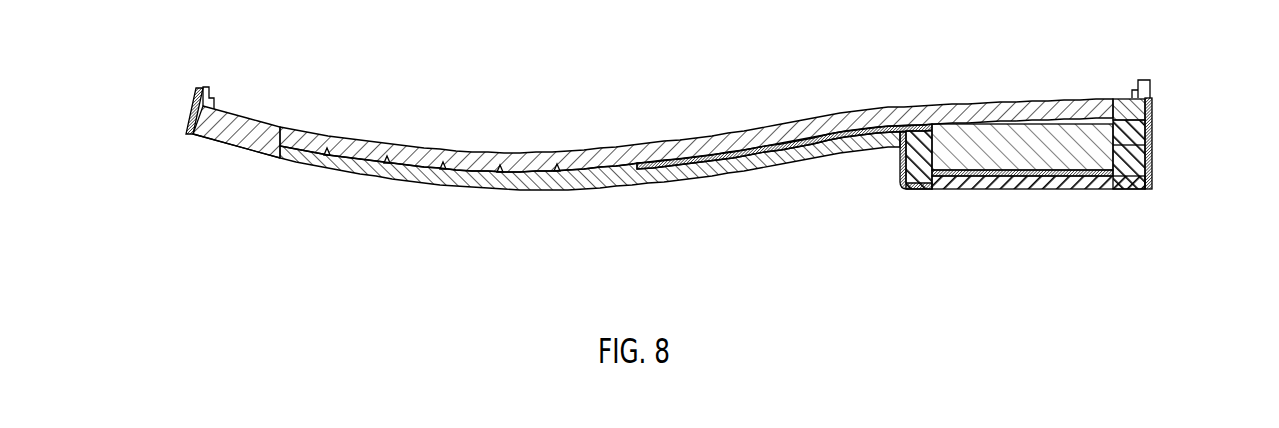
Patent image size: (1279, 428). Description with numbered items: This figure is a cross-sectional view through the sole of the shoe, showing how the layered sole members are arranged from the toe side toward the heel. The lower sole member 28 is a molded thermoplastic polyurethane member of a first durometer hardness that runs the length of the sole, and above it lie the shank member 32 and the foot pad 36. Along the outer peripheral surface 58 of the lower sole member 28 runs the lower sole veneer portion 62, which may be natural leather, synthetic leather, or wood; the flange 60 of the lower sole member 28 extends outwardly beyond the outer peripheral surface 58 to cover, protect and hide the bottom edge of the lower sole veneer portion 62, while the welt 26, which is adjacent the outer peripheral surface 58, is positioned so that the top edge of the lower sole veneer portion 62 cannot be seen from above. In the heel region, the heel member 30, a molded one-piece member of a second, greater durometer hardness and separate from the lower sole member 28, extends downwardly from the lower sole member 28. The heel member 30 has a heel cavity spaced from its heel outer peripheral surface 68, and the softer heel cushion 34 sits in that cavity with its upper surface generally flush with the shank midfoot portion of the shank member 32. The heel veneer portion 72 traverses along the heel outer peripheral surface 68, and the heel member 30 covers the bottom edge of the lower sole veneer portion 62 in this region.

The welt 26 is at (204, 92).
The lower sole member 28 is at (417, 182).
The heel member 30 is at (925, 190).
The shank member 32 is at (777, 160).
The heel cushion 34 is at (1152, 148).
The foot pad 36 is at (700, 138).
The outer peripheral surface 58 is at (192, 108).
The flange 60 is at (188, 132).
The lower sole veneer portion 62 is at (192, 112).
The heel outer peripheral surface 68 is at (1152, 184).
The heel veneer portion 72 is at (1152, 168).